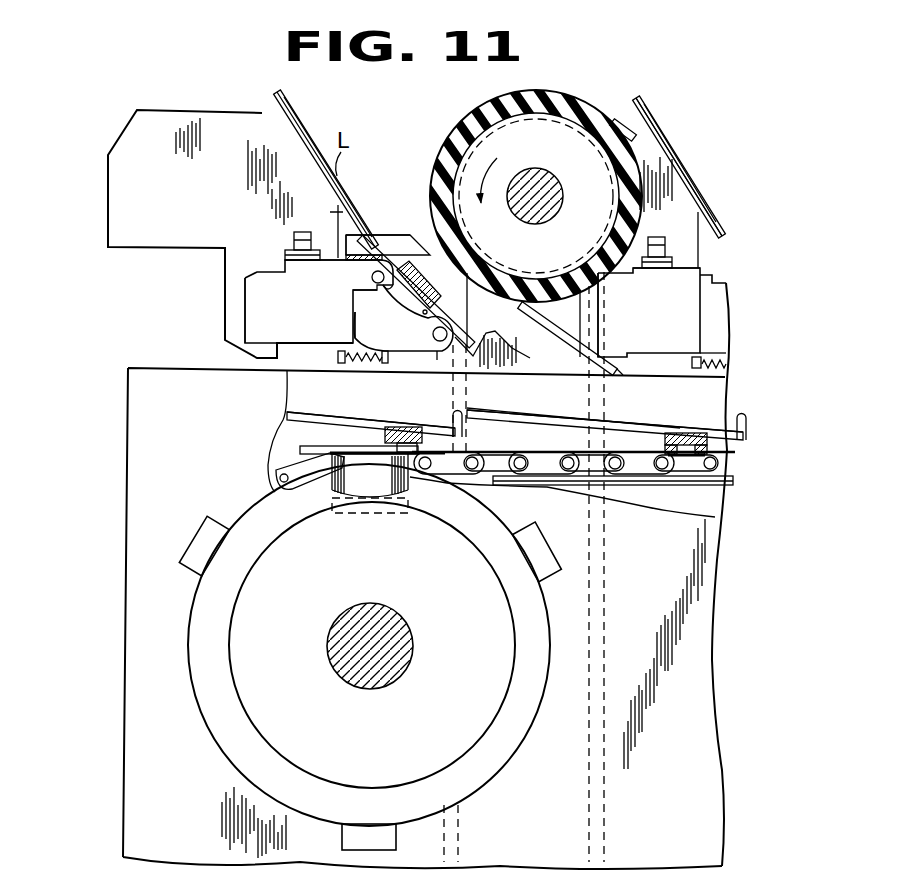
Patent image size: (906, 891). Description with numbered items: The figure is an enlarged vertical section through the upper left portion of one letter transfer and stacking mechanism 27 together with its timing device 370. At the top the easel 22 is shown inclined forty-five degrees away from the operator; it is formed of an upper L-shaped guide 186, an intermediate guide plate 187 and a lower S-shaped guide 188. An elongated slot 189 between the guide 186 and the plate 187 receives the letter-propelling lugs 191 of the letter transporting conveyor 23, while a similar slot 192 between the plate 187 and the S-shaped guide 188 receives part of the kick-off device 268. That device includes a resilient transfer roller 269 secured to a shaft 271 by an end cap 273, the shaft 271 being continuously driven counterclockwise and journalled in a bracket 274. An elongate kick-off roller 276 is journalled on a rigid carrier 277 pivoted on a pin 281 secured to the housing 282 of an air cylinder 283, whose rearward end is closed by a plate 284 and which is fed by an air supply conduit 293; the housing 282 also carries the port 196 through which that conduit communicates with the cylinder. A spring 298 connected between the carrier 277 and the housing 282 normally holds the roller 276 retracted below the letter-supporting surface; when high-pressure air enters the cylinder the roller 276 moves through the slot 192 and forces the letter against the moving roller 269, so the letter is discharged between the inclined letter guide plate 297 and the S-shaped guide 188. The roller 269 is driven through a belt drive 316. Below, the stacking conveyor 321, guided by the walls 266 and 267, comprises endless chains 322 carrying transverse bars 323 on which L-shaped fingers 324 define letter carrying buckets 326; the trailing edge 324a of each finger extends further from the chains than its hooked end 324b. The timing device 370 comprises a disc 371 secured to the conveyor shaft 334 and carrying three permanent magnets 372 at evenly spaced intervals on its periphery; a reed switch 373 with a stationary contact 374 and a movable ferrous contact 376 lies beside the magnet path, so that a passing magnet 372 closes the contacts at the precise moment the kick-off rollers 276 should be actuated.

The easel 22 is at (266, 96).
The letter transporting conveyor 23 is at (346, 231).
The letter transfer and stacking mechanism 27 is at (714, 176).
The upper L-shaped guide 186 is at (268, 128).
The intermediate guide plate 187 is at (410, 288).
The lower S-shaped guide 188 is at (513, 329).
The elongated slot 189 is at (378, 234).
The letter-propelling lugs 191 is at (408, 236).
The slot 192 is at (425, 312).
The pivot 196 is at (364, 264).
The wall 266 is at (630, 794).
The wall 267 is at (707, 388).
The kick-off device 268 is at (342, 176).
The resilient transfer roller 269 is at (565, 95).
The shaft 271 is at (533, 170).
The end cap 273 is at (516, 254).
The bracket 274 is at (124, 218).
The kick-off roller 276 is at (437, 358).
The carrier 277 is at (375, 348).
The pin 281 is at (352, 293).
The housing 282 is at (257, 278).
The air cylinder 283 is at (257, 290).
The plate 284 is at (237, 308).
The air supply conduit 293 is at (306, 232).
The letter guide plate 297 is at (620, 372).
The spring 298 is at (373, 366).
The belt drive 316 is at (583, 817).
The stacking conveyor 321 is at (685, 492).
The endless chain 322 is at (615, 472).
The bar 323 is at (385, 434).
The L-shaped finger 324 is at (294, 412).
The trailing edge 324a is at (480, 409).
The hooked end 324b is at (452, 418).
The letter carrying bucket 326 is at (315, 410).
The shaft 334 is at (370, 606).
The timing device 370 is at (186, 640).
The disc 371 is at (217, 718).
The permanent magnet 372 is at (210, 527).
The reed switch 373 is at (348, 483).
The stationary contact 374 is at (300, 450).
The movable ferrous contact 376 is at (440, 452).